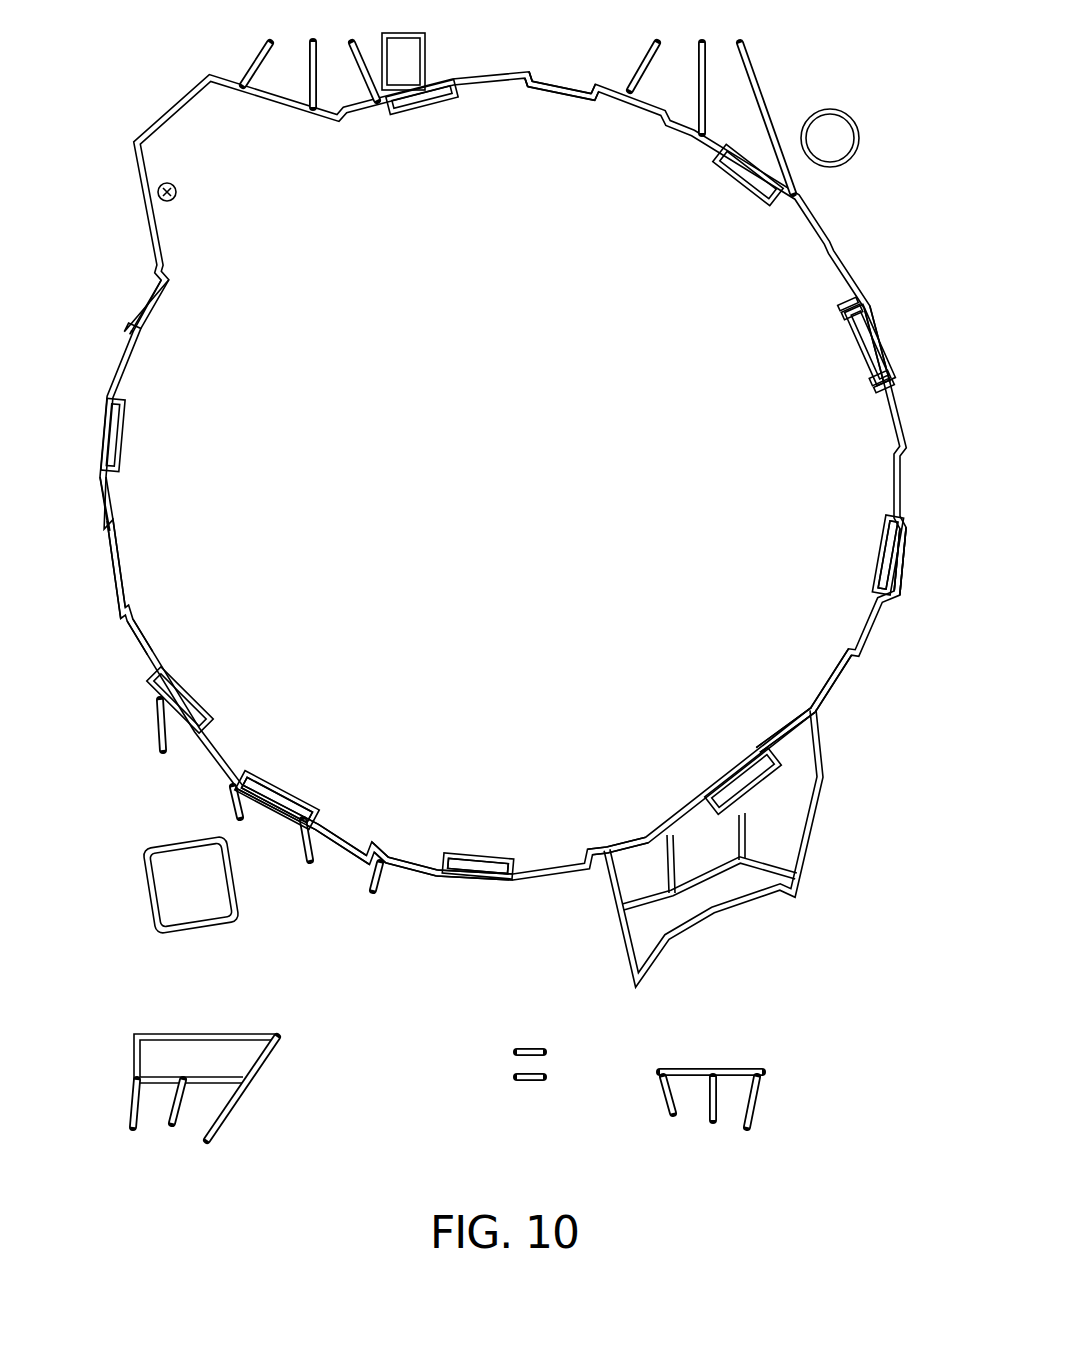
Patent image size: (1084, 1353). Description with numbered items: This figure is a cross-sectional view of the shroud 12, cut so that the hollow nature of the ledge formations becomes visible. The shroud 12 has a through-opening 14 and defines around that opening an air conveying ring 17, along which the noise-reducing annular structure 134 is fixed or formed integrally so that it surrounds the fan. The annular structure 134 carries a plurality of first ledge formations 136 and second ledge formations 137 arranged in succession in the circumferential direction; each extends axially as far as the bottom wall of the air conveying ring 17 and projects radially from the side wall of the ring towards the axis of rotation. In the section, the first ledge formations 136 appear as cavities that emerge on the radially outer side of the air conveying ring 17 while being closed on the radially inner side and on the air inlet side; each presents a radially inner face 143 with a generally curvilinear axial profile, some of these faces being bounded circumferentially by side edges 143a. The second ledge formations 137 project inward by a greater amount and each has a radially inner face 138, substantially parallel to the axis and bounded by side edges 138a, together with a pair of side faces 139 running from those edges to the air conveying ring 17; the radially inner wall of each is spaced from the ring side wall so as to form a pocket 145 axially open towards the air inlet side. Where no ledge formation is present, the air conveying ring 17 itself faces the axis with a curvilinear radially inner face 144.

The shroud 12 is at (790, 103).
The through-opening 14 is at (385, 112).
The air conveying ring 17 is at (150, 297).
The noise-reducing annular structure 134 is at (155, 696).
The first ledge formation 136 is at (553, 78).
The second ledge formation 137 is at (887, 340).
The radially inner face 138 is at (860, 343).
The side edge 138a is at (852, 312).
The side face 139 is at (847, 305).
The radially inner face 143 is at (565, 100).
The side edge 143a is at (525, 87).
The radially inner face 144 is at (120, 578).
The pocket 145 is at (280, 800).